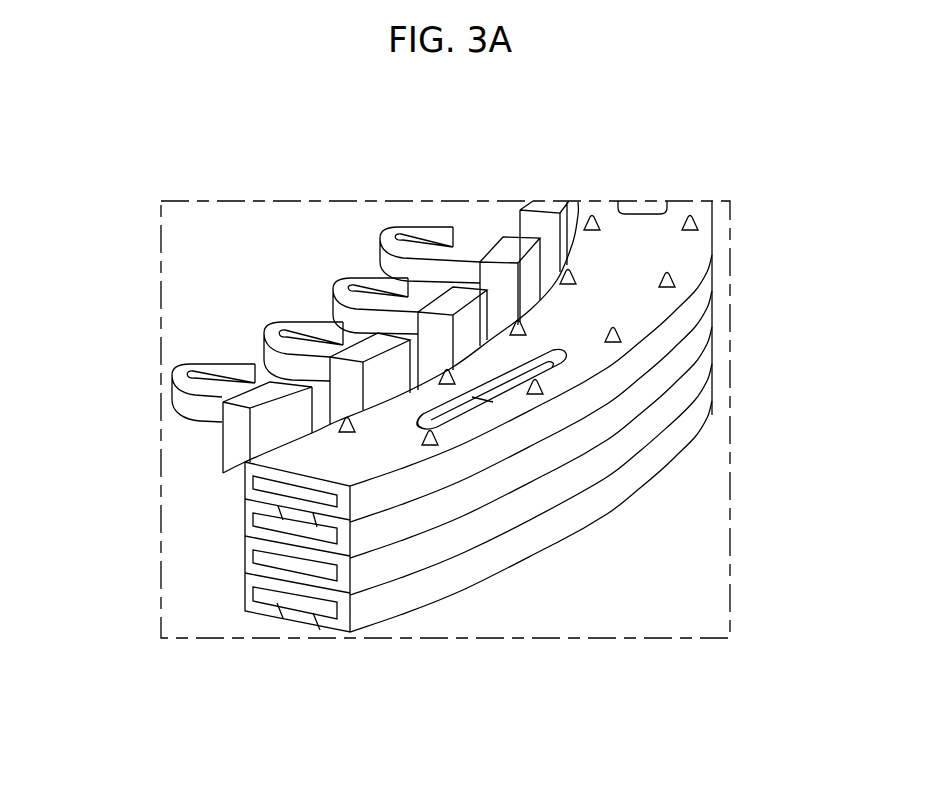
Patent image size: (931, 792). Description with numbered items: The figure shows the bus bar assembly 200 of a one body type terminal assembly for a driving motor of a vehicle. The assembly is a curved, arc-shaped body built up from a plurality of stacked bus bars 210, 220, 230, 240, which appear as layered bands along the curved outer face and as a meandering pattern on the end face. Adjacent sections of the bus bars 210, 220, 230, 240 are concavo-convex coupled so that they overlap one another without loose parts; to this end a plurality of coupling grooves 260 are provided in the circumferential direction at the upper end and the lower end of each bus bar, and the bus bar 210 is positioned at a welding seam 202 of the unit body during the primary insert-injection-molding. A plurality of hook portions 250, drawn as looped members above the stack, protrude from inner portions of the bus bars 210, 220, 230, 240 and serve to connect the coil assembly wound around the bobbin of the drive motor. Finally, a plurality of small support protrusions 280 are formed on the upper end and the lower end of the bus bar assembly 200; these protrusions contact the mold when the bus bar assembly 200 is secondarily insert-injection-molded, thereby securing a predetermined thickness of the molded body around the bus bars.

The bus bar assembly 200 is at (668, 523).
The welding seam 202 is at (547, 367).
The bus bar 210 is at (543, 533).
The bus bar 220 is at (412, 553).
The bus bar 230 is at (245, 518).
The bus bar 240 is at (245, 482).
The hook portions 250 is at (333, 288).
The coupling grooves 260 is at (432, 413).
The support protrusions 280 is at (689, 213).